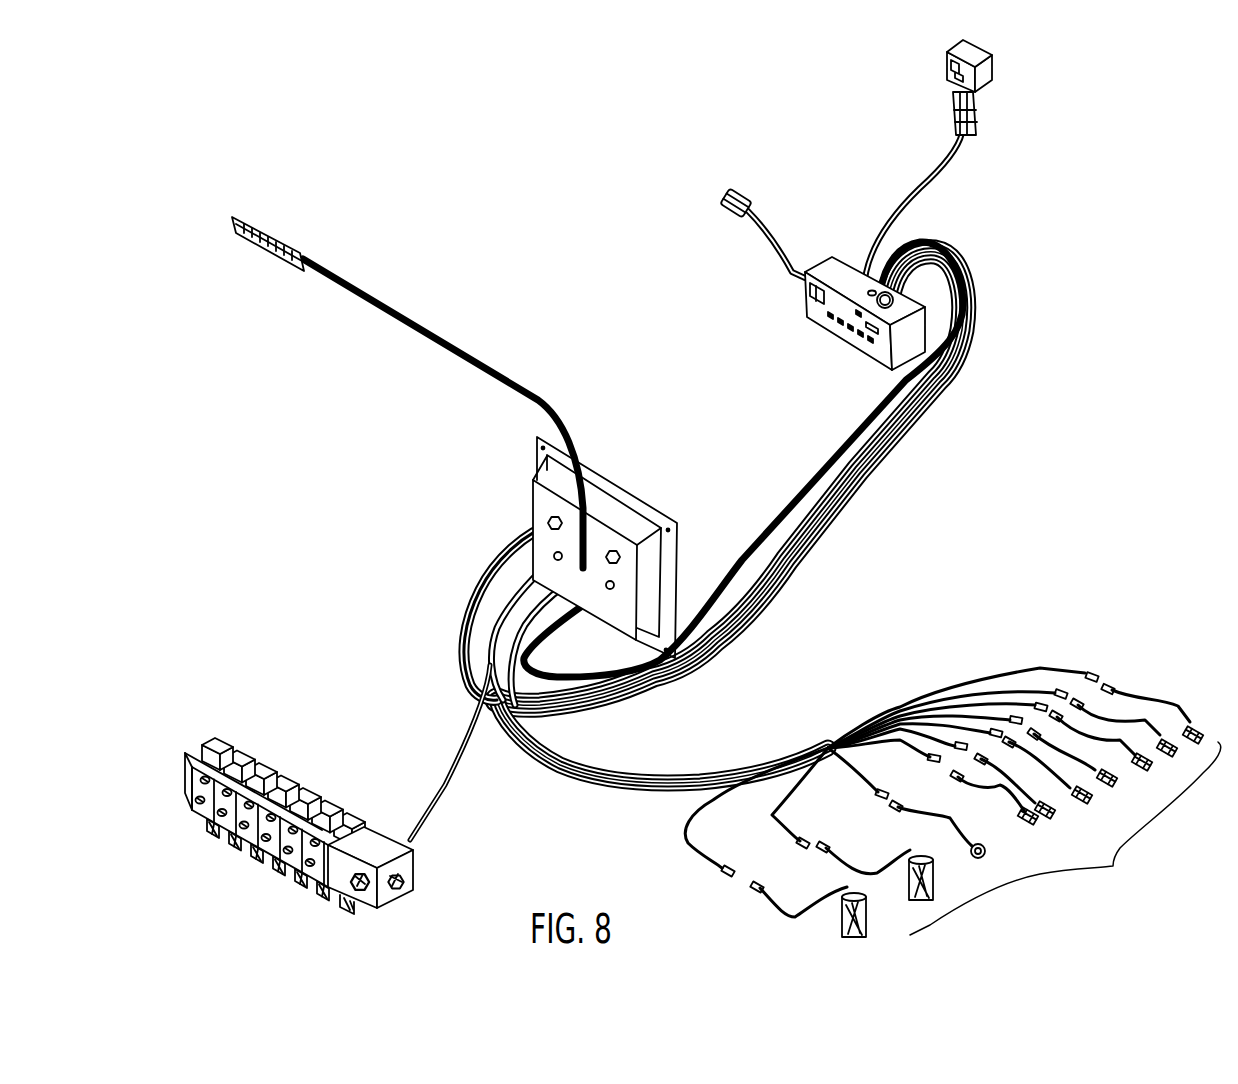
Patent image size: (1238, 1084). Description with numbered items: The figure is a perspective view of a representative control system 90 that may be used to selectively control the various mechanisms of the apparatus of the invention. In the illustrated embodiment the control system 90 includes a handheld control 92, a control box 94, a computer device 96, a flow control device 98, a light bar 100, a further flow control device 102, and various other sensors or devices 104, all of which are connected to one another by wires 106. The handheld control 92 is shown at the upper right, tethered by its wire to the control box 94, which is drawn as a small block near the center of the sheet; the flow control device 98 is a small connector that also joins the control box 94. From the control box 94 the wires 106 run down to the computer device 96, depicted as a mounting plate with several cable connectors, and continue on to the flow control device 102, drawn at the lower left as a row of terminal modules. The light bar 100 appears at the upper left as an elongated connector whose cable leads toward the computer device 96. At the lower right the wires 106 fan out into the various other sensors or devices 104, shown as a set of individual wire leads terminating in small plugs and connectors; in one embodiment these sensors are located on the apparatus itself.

The control system 90 is at (470, 240).
The handheld control 92 is at (995, 110).
The control box 94 is at (843, 354).
The computer device 96 is at (641, 480).
The flow control device 98 is at (719, 229).
The light bar 100 is at (260, 262).
The flow control device 102 is at (229, 724).
The sensors or devices 104 is at (952, 802).
The wires 106 is at (783, 600).